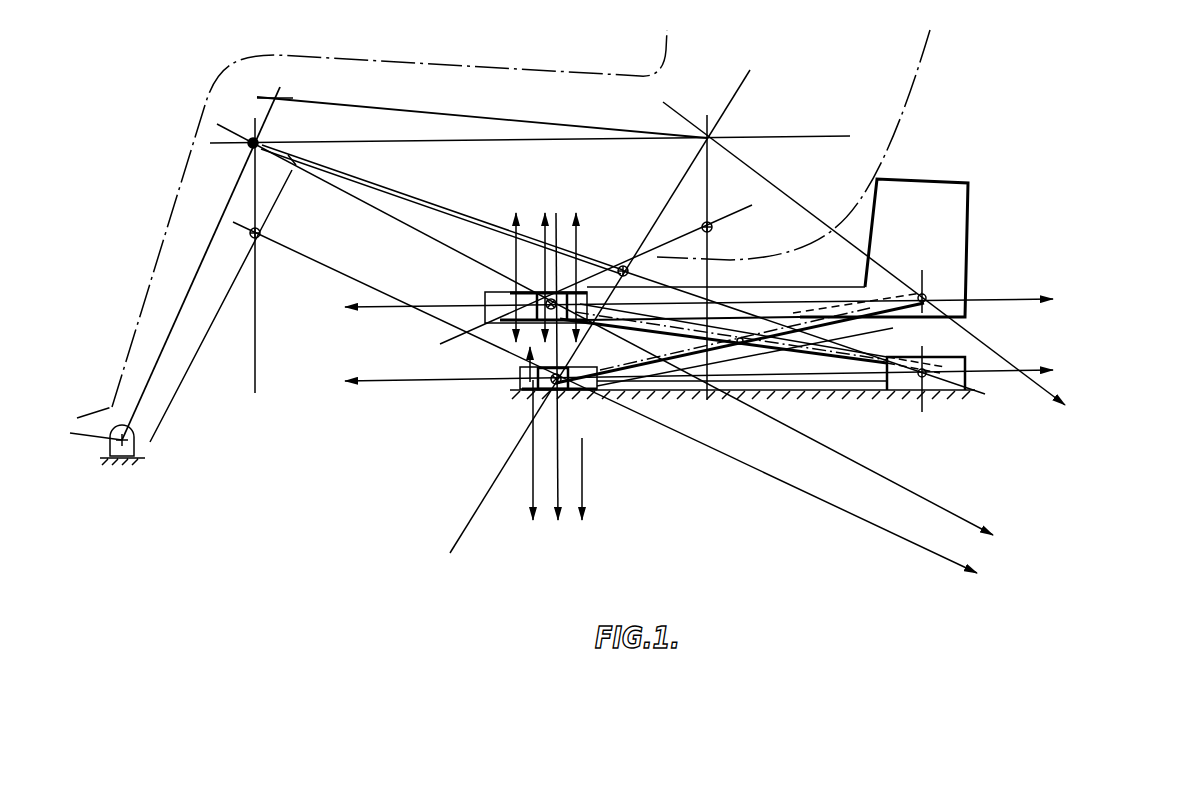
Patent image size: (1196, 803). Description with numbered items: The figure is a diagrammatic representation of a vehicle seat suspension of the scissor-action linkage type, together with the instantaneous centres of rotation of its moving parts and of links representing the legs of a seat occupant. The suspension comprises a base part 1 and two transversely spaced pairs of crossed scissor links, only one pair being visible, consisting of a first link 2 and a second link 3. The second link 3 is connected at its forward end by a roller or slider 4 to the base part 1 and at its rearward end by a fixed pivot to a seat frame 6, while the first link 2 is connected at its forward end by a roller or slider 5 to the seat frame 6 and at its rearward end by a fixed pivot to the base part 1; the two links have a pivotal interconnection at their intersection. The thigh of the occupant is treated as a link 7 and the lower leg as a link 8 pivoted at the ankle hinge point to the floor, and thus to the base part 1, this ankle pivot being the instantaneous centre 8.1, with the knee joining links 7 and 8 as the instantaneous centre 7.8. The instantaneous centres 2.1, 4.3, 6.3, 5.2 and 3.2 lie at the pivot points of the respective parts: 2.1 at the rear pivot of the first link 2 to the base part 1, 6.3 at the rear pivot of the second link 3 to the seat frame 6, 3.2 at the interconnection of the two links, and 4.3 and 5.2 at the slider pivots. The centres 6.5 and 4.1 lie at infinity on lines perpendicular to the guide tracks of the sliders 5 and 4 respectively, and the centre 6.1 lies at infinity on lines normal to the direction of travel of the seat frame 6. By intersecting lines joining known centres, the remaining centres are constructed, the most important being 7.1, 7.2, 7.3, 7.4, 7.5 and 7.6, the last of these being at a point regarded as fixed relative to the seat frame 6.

The base part 1 is at (886, 394).
The first link 2 is at (835, 354).
The second link 3 is at (614, 364).
The roller or slider 4 is at (520, 392).
The roller or slider 5 is at (495, 292).
The seat frame 6 is at (776, 249).
The link representing upper leg or thigh 7 is at (498, 114).
The link representing lower leg 8 is at (188, 294).
The instantaneous centre I7.1 7.1 is at (258, 142).
The instantaneous centre I7.2 7.2 is at (618, 266).
The instantaneous centre I7.3 7.3 is at (1078, 405).
The instantaneous centre I7.4 7.4 is at (261, 233).
The instantaneous centre I7.5 7.5 is at (712, 229).
The instantaneous centre I7.6 7.6 is at (710, 138).
The instantaneous centre I7.8 7.8 is at (280, 97).
The instantaneous centre I8.1 8.1 is at (136, 440).
The instantaneous centre I6.3 6.3 is at (925, 292).
The instantaneous centre I2.1 2.1 is at (926, 380).
The instantaneous centre I3.2 3.2 is at (740, 343).
The instantaneous centre I6.1 6.1 is at (1056, 378).
The instantaneous centre I6.5 6.5 is at (582, 215).
The instantaneous centre I4.1 4.1 is at (597, 527).
The instantaneous centre I4.3 4.3 is at (705, 465).
The instantaneous centre I5.2 5.2 is at (487, 320).